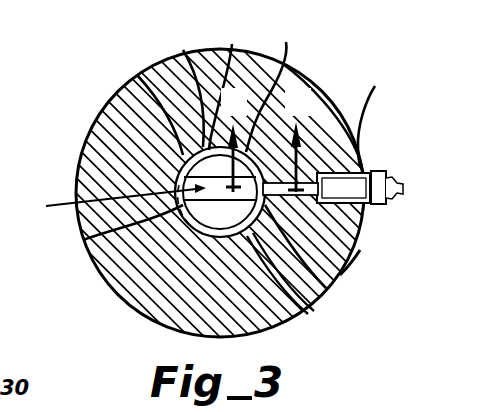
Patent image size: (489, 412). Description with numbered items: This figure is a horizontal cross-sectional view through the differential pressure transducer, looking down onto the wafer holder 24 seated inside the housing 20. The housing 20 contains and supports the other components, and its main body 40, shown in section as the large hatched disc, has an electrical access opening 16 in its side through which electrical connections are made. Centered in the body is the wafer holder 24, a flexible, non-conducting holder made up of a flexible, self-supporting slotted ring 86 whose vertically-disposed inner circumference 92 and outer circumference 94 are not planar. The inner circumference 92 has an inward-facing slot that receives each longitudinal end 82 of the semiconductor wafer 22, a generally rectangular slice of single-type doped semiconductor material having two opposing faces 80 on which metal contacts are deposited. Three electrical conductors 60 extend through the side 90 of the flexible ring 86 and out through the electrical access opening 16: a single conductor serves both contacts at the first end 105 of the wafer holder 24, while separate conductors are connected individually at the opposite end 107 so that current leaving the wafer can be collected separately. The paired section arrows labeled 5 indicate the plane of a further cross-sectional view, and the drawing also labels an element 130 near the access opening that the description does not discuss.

The section line 5 is at (269, 141).
The electrical access opening 16 is at (357, 132).
The housing 20 is at (78, 171).
The semiconductor wafer 22 is at (140, 77).
The wafer holder 24 is at (190, 252).
The main body 40 is at (120, 117).
The electrical conductors 60 is at (352, 262).
The opposing faces 80 is at (303, 73).
The longitudinal end 82 is at (306, 304).
The slotted ring 86 is at (70, 241).
The side 90 is at (183, 50).
The inner circumference 92 is at (232, 44).
The outer circumference 94 is at (286, 42).
The first end 105 is at (129, 199).
The opposite end 107 is at (326, 288).
The plug 130 is at (363, 165).